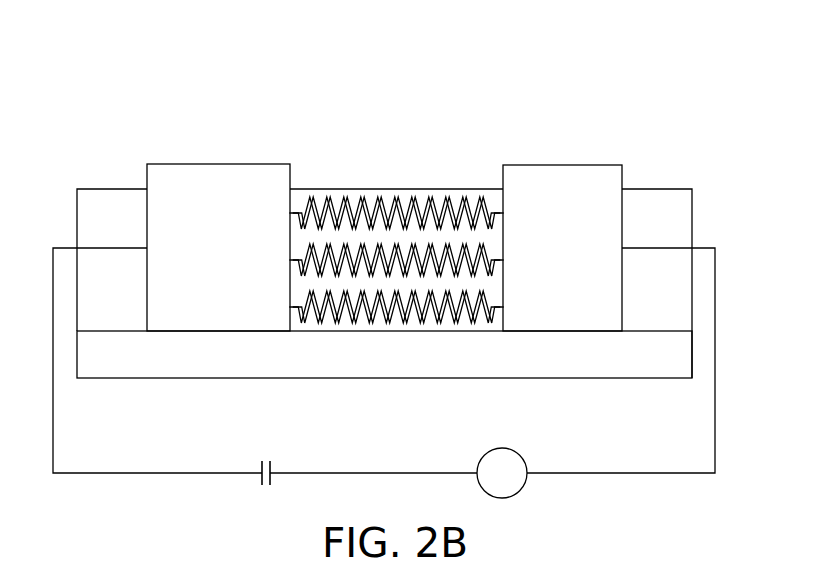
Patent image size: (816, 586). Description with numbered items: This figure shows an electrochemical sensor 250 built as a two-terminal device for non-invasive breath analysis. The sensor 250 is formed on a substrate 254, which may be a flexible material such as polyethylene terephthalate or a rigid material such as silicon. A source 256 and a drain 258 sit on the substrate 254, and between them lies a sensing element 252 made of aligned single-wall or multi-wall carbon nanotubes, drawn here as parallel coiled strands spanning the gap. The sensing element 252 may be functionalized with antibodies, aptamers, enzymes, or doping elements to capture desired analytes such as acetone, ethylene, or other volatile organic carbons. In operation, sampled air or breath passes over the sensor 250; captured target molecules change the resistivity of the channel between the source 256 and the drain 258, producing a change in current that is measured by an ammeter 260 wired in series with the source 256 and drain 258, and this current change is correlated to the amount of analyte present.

The electrochemical sensor 250 is at (125, 72).
The sensing element 252 is at (397, 173).
The substrate 254 is at (397, 380).
The source 256 is at (218, 163).
The drain 258 is at (563, 164).
The ammeter 260 is at (505, 448).